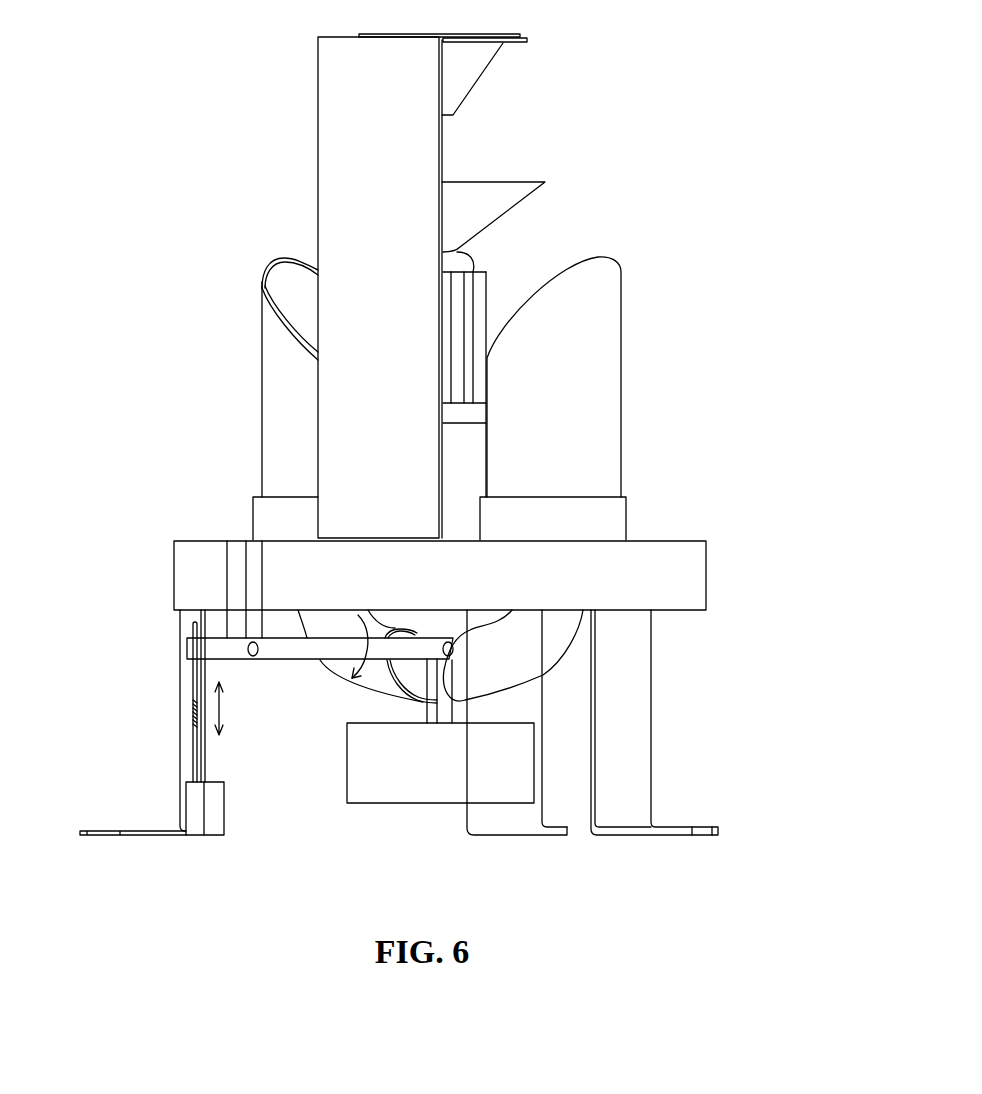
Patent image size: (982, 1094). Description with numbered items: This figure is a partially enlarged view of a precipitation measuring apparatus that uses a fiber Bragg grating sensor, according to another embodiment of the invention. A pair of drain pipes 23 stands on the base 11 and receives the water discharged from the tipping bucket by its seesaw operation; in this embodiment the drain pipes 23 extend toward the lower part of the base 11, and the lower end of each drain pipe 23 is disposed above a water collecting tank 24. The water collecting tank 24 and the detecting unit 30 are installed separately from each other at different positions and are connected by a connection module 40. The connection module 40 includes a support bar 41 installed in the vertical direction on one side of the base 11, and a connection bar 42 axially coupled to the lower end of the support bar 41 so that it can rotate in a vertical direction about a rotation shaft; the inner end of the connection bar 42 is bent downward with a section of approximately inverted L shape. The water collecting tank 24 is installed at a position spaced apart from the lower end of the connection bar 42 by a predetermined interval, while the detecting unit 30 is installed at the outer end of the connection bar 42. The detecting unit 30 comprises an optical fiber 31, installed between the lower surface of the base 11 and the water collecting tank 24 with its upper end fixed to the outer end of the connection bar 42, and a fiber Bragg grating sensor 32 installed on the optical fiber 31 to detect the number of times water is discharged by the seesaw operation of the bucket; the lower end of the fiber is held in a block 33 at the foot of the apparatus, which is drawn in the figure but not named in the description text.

The base 11 is at (686, 578).
The drain pipes 23 is at (275, 408).
The water collecting tank 24 is at (428, 778).
The detecting unit 30 is at (190, 753).
The optical fiber 31 is at (193, 680).
The fiber Bragg grating sensor 32 is at (193, 717).
The support block 33 is at (217, 810).
The connection module 40 is at (222, 593).
The support bar 41 is at (237, 562).
The connection bar 42 is at (290, 652).